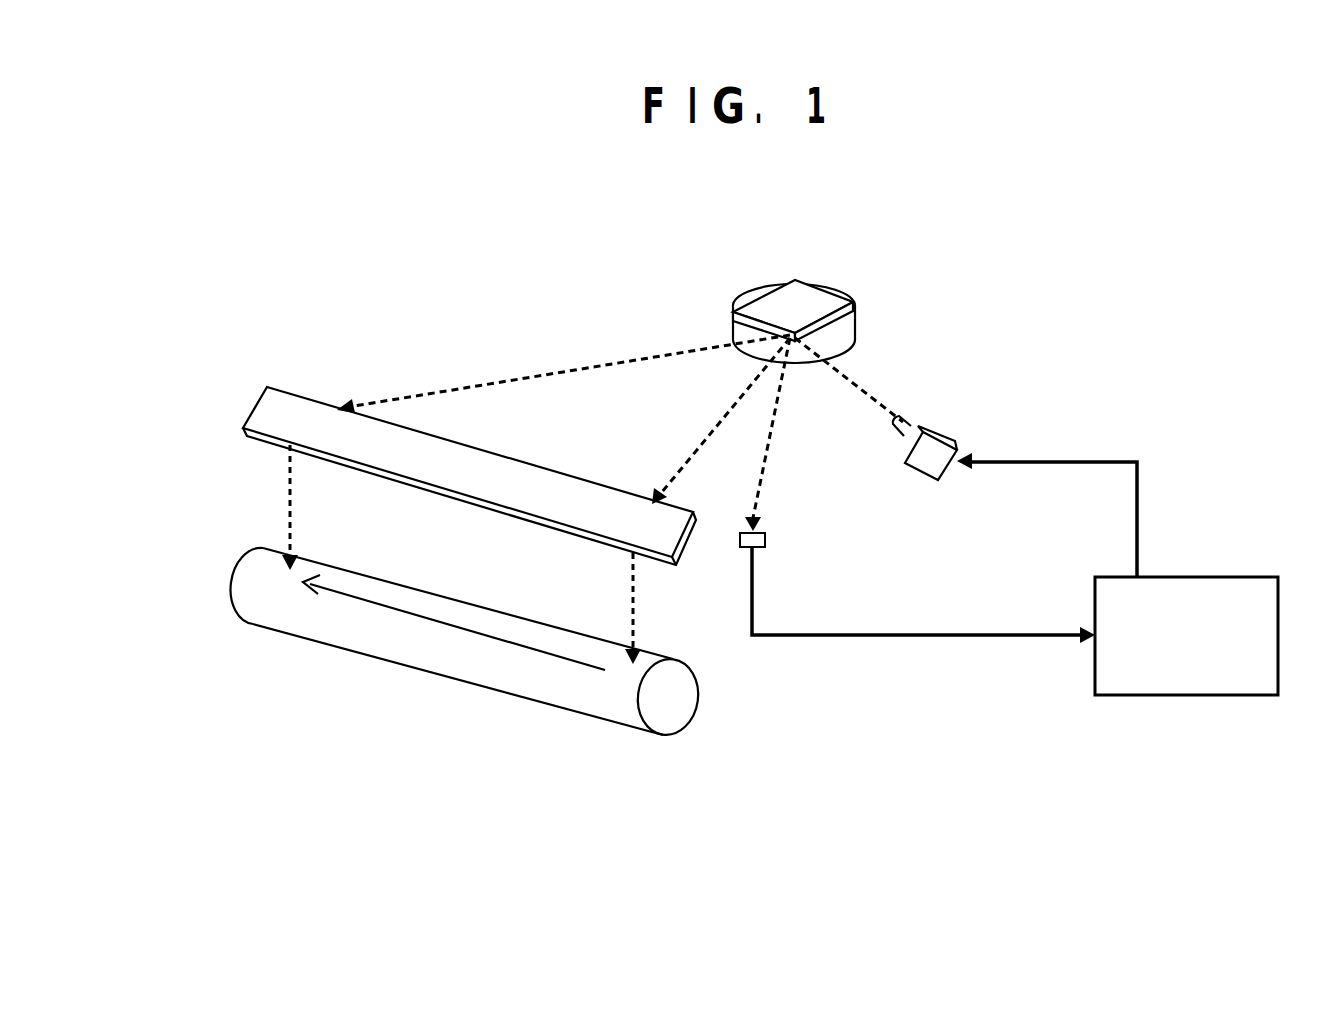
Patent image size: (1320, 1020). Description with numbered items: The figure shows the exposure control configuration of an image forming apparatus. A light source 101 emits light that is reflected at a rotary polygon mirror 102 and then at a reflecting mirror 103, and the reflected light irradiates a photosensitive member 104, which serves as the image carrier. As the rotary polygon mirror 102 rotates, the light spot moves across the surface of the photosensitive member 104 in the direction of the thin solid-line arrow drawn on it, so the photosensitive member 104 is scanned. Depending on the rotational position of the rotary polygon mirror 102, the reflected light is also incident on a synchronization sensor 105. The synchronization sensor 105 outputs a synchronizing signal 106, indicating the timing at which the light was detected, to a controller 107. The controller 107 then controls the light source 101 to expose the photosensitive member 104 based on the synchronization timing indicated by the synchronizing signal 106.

The light source 101 is at (940, 435).
The rotary polygon mirror 102 is at (828, 294).
The reflecting mirror 103 is at (297, 397).
The photosensitive member 104 is at (543, 702).
The synchronization sensor 105 is at (766, 540).
The synchronizing signal 106 is at (948, 640).
The controller 107 is at (1198, 577).